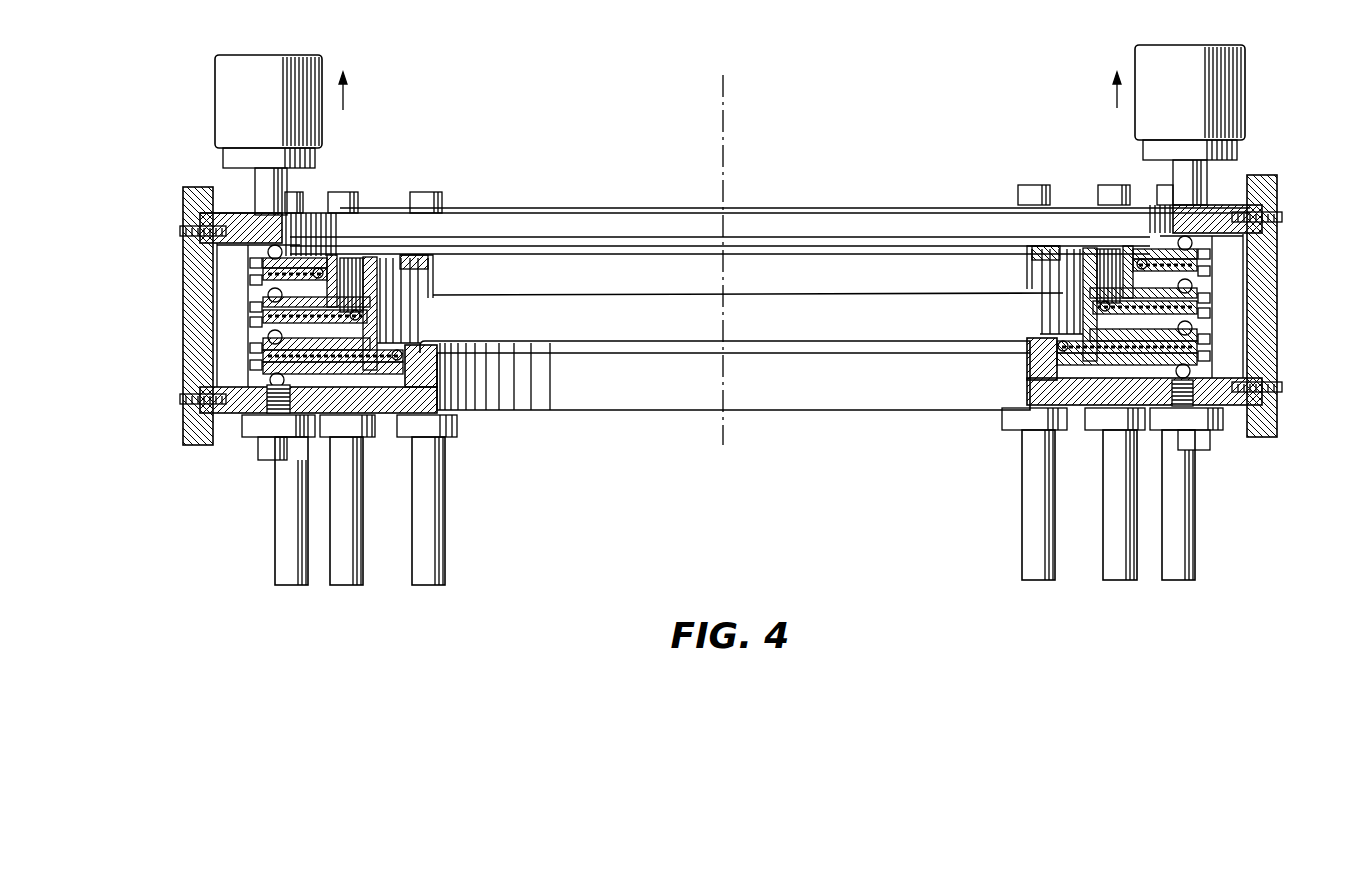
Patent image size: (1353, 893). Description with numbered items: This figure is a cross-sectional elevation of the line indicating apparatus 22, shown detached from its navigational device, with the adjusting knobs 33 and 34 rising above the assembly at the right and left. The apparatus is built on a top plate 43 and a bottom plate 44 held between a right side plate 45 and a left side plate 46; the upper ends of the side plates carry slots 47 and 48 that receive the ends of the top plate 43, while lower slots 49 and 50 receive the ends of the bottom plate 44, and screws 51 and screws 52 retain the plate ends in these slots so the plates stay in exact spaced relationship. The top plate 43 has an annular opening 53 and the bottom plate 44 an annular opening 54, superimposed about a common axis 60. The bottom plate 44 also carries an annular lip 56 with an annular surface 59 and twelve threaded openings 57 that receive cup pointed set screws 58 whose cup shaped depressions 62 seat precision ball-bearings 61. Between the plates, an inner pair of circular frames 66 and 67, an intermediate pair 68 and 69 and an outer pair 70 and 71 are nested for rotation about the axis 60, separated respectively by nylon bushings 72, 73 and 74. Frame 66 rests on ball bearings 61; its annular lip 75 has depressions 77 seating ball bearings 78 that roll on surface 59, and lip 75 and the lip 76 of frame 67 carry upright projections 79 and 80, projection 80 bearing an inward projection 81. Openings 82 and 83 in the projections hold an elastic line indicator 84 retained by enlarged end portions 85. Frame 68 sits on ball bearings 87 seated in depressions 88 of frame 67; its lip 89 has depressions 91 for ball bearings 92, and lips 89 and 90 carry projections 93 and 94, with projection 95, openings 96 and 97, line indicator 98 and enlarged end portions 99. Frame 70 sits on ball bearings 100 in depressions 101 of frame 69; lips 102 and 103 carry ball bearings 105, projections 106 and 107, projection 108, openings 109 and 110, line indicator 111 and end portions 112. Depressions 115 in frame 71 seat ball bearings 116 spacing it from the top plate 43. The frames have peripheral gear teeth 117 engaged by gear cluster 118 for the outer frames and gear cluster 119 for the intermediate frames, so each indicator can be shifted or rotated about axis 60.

The line indicating apparatus 22 is at (903, 150).
The right adjusting knob 33 is at (1163, 60).
The left adjusting knob 34 is at (268, 55).
The top plate 43 is at (780, 226).
The bottom plate 44 is at (769, 401).
The right side plate 45 is at (1280, 368).
The left side plate 46 is at (183, 343).
The slot 47 is at (1252, 215).
The slot 48 is at (213, 222).
The lower slot 49 is at (1250, 362).
The lower slot 50 is at (205, 384).
The screws 51 is at (1282, 220).
The screws 52 is at (180, 231).
The annular opening 53 is at (655, 213).
The annular opening 54 is at (670, 383).
The annular lip 56 is at (430, 338).
The threaded openings 57 is at (347, 500).
The cup pointed set screws 58 is at (286, 455).
The annular surface 59 is at (401, 380).
The common axis 60 is at (725, 148).
The precision ball-bearings 61 is at (264, 376).
The cup shaped depressions 62 is at (258, 420).
The circular frame 66 is at (1200, 373).
The circular frame 67 is at (1262, 346).
The circular frame 68 is at (1200, 346).
The circular frame 69 is at (1248, 324).
The circular frame 70 is at (1200, 322).
The circular frame 71 is at (1262, 290).
The nylon bushing 72 is at (383, 418).
The nylon bushing 73 is at (372, 318).
The nylon bushing 74 is at (262, 262).
The annular lip 75 is at (372, 325).
The annular lip 76 is at (622, 333).
The annular depressions 77 is at (980, 338).
The precision ball bearings 78 is at (1053, 342).
The semiannular upright projection 79 is at (1053, 307).
The semiannular upright projection 80 is at (433, 270).
The semiannular projection 81 is at (440, 260).
The opening 82 is at (1060, 262).
The opening 83 is at (433, 260).
The elastic line indicator 84 is at (855, 258).
The enlarged end portions 85 is at (1022, 282).
The ball bearings 87 is at (262, 340).
The annular depressions 88 is at (262, 355).
The annular lip 89 is at (1113, 247).
The annular lip 90 is at (423, 308).
The annular depressions 91 is at (400, 303).
The precision ball bearings 92 is at (1073, 292).
The semiannular upright projection 93 is at (1107, 250).
The semiannular upright projection 94 is at (357, 248).
The semiannular projection 95 is at (390, 247).
The opening 96 is at (1140, 240).
The opening 97 is at (338, 266).
The elastic line indicator 98 is at (693, 255).
The enlarged end portions 99 is at (1132, 247).
The ball bearings 100 is at (262, 295).
The annular depressions 101 is at (262, 310).
The annular lip 102 is at (1147, 227).
The annular lip 103 is at (280, 212).
The precision ball bearings 105 is at (1025, 311).
The semiannular upright projection 106 is at (1075, 232).
The semiannular upright projection 107 is at (330, 262).
The semiannular projection 108 is at (313, 262).
The opening 109 is at (1183, 203).
The opening 110 is at (320, 257).
The elastic line indicator 111 is at (830, 237).
The enlarged end portions 112 is at (215, 256).
The annular depressions 115 is at (1199, 284).
The ball bearings 116 is at (1195, 238).
The gear teeth 117 is at (1218, 407).
The gear cluster 118 is at (1205, 520).
The gear cluster 119 is at (455, 543).